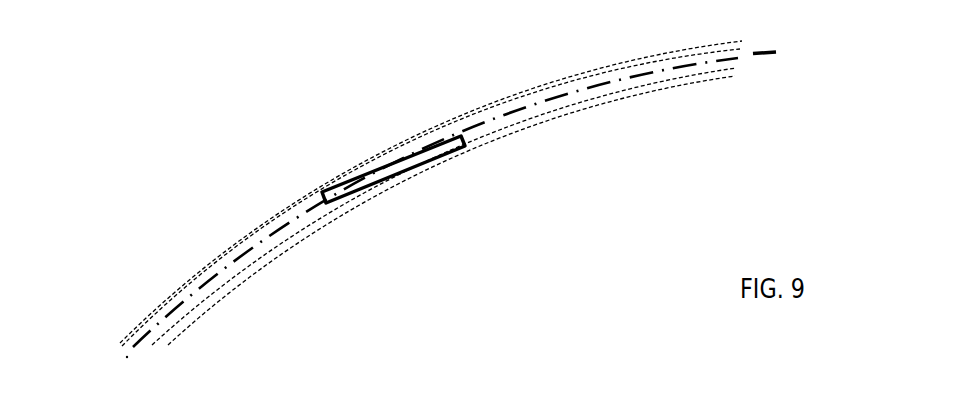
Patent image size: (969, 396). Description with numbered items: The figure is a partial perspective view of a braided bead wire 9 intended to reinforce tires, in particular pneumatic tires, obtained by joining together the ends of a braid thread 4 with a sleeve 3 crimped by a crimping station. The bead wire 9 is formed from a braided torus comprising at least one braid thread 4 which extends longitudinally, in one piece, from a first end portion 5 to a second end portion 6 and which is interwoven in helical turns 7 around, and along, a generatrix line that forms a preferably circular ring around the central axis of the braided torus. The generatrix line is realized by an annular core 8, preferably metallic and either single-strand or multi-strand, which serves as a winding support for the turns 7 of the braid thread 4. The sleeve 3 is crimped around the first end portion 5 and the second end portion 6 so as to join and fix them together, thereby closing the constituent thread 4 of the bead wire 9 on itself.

The sleeve 3 is at (373, 167).
The thread 4 is at (517, 117).
The first end portion 5 is at (460, 128).
The second end portion 6 is at (272, 222).
The helical turns 7 is at (592, 108).
The annular core 8 is at (758, 57).
The bead wire 9 is at (502, 210).